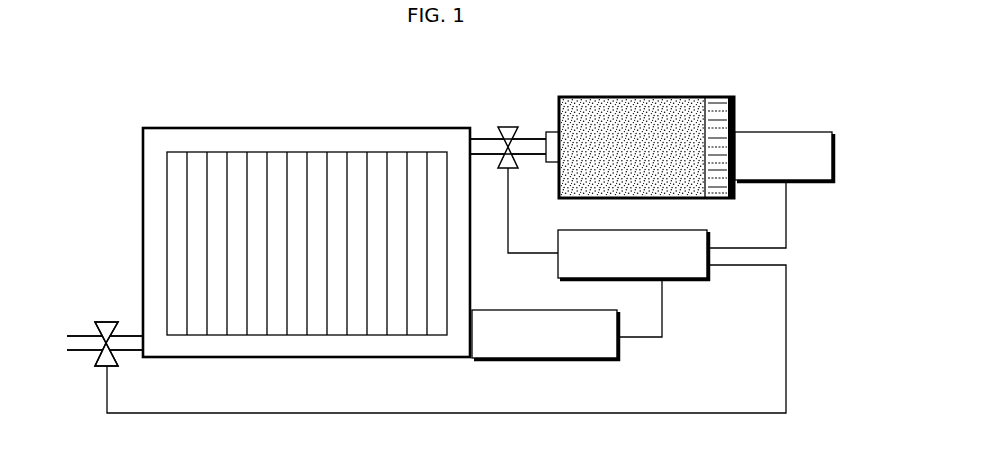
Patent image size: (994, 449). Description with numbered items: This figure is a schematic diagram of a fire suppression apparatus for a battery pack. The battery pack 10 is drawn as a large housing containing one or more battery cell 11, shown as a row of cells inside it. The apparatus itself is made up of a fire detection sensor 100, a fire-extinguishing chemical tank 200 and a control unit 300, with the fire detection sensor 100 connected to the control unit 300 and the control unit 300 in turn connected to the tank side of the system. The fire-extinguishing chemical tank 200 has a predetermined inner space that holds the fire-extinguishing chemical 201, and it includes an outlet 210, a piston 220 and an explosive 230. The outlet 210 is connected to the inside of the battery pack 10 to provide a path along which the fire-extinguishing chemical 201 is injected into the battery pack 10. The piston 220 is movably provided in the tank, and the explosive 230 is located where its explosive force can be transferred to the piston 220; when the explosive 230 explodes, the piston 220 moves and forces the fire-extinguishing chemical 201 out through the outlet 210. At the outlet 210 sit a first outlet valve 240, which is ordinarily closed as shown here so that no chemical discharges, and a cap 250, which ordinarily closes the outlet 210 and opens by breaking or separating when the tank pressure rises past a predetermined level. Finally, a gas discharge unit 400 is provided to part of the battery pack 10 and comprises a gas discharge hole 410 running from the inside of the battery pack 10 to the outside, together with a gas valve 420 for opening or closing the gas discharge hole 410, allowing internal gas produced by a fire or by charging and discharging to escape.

The battery pack 10 is at (341, 128).
The battery cell 11 is at (258, 158).
The fire detection sensor 100 is at (512, 310).
The fire-extinguishing chemical tank 200 is at (668, 96).
The fire-extinguishing chemical 201 is at (607, 103).
The outlet 210 is at (532, 156).
The piston 220 is at (718, 97).
The explosive 230 is at (803, 132).
The first outlet valve 240 is at (505, 127).
The cap 250 is at (547, 133).
The control unit 300 is at (691, 280).
The gas discharge unit 400 is at (81, 363).
The gas discharge hole 410 is at (85, 336).
The gas valve 420 is at (107, 322).